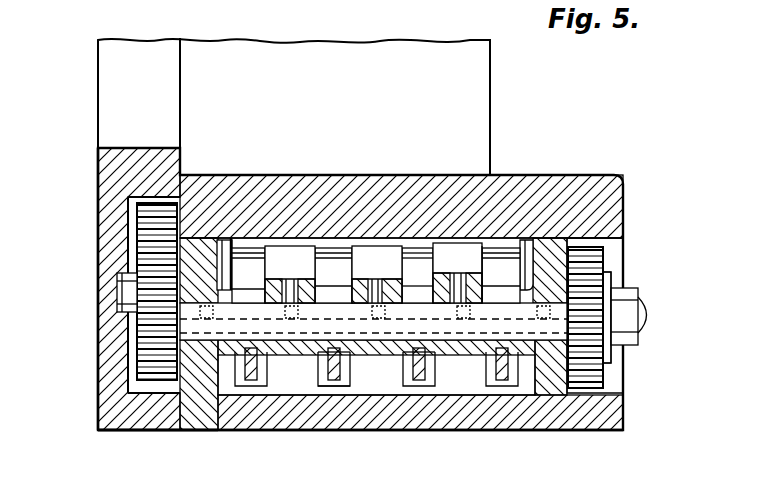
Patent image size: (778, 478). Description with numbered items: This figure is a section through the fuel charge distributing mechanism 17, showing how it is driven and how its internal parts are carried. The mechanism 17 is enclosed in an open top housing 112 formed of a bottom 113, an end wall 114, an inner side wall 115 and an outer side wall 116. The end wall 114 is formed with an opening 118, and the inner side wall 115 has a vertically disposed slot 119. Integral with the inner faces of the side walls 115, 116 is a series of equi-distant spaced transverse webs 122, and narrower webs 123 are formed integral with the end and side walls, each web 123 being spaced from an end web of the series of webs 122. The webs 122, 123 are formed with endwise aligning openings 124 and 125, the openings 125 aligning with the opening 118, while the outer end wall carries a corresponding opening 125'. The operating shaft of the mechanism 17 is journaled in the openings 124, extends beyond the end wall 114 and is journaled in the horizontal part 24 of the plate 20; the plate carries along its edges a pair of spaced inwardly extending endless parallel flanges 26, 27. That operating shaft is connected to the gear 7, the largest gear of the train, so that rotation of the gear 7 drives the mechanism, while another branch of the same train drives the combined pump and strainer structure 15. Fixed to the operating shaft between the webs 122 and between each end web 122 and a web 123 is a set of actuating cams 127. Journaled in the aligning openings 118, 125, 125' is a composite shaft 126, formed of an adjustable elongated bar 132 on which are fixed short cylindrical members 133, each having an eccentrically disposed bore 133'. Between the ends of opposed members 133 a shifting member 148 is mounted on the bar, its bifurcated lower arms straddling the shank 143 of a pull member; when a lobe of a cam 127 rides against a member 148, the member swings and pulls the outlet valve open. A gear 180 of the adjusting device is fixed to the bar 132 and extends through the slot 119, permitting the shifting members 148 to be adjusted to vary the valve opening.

The gear 7 is at (143, 346).
The combined pump and strainer structure 15 is at (612, 258).
The fuel charge distributing mechanism 17 is at (573, 168).
The plate 20 is at (96, 97).
The horizontal part 24 is at (100, 243).
The flange 26 is at (140, 207).
The flange 27 is at (148, 414).
The housing 112 is at (554, 431).
The bottom 113 is at (458, 414).
The end wall 114 is at (203, 378).
The inner side wall 115 is at (553, 358).
The outer side wall 116 is at (607, 192).
The opening 118 is at (142, 391).
The slot 119 is at (590, 242).
The web 122 is at (308, 282).
The web 123 is at (224, 302).
The opening 124 is at (417, 363).
The opening 125 is at (413, 373).
The opening 125' is at (468, 224).
The composite shaft 126 is at (219, 314).
The actuating cam 127 is at (250, 262).
The bar 132 is at (269, 350).
The cylindrical member 133 is at (356, 371).
The bore 133' is at (442, 371).
The shank 143 is at (332, 388).
The shifting member 148 is at (421, 302).
The gear 180 is at (612, 373).